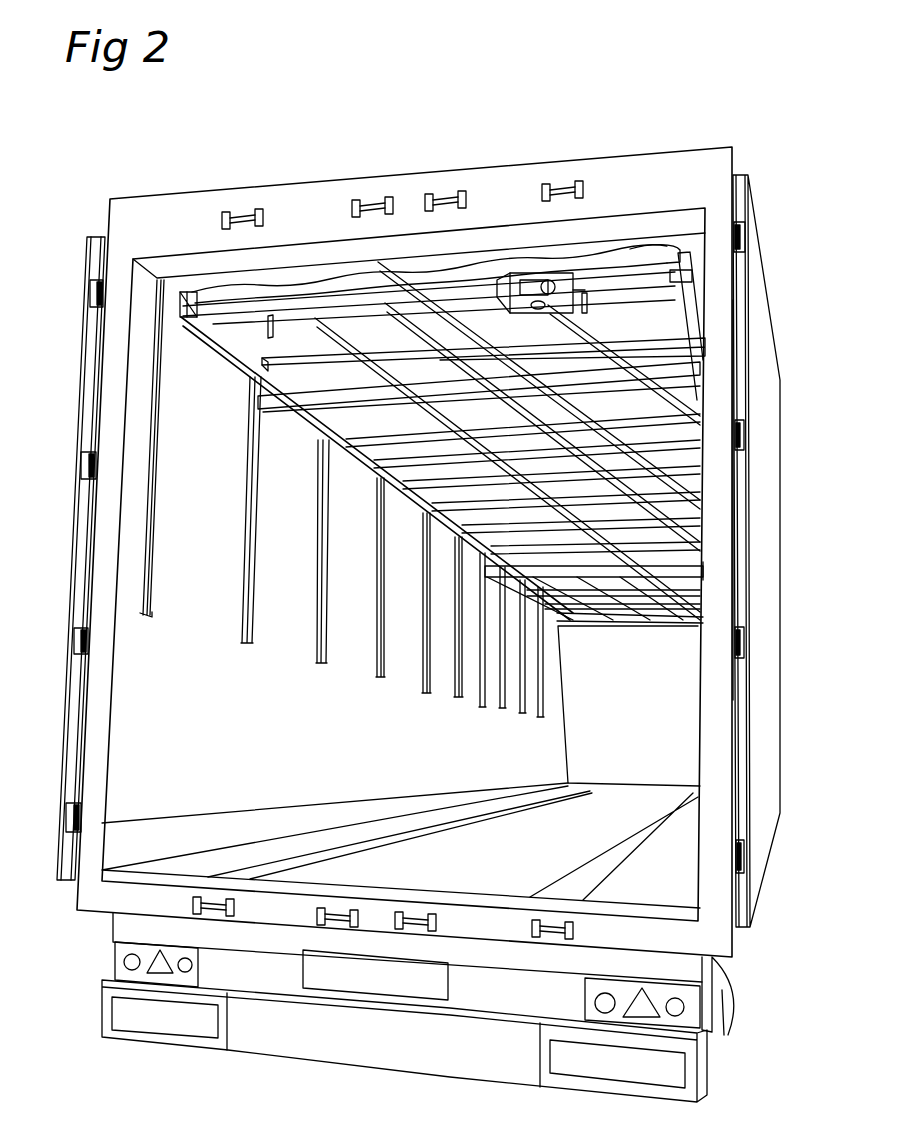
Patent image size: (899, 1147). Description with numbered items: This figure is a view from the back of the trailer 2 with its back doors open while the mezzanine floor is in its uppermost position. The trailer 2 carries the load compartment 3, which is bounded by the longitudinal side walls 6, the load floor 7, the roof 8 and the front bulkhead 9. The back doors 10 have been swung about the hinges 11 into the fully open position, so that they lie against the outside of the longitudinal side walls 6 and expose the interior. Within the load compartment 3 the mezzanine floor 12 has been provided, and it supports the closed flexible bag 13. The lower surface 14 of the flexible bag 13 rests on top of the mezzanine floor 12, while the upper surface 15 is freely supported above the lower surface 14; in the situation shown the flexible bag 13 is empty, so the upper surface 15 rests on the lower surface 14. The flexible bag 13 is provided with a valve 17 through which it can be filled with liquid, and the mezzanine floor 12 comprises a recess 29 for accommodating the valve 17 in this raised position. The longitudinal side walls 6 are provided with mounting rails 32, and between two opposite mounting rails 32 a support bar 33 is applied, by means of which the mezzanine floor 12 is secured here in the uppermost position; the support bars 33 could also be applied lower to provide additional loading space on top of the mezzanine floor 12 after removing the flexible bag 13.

The trailer 2 is at (539, 150).
The load compartment 3 is at (370, 330).
The longitudinal side walls 6 is at (180, 485).
The load floor 7 is at (650, 887).
The roof 8 is at (458, 262).
The front bulkhead 9 is at (663, 730).
The back doors 10 is at (82, 523).
The hinges 11 is at (92, 297).
The mezzanine floor 12 is at (655, 362).
The flexible bag 13 is at (603, 262).
The lower surface 14 is at (270, 322).
The upper surface 15 is at (395, 292).
The valve 17 is at (535, 283).
The recess 29 is at (560, 302).
The mounting rails 32 is at (253, 583).
The support bar 33 is at (295, 405).